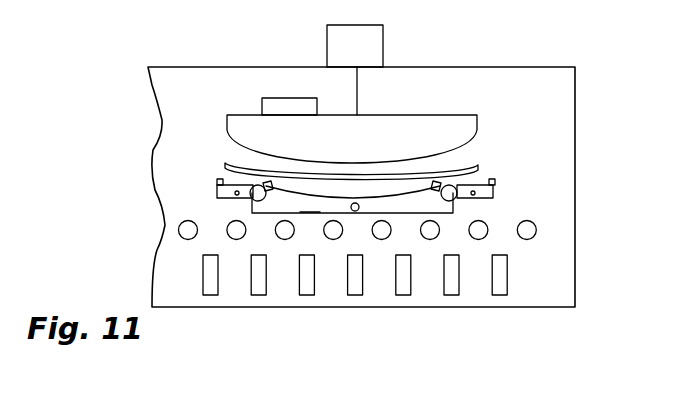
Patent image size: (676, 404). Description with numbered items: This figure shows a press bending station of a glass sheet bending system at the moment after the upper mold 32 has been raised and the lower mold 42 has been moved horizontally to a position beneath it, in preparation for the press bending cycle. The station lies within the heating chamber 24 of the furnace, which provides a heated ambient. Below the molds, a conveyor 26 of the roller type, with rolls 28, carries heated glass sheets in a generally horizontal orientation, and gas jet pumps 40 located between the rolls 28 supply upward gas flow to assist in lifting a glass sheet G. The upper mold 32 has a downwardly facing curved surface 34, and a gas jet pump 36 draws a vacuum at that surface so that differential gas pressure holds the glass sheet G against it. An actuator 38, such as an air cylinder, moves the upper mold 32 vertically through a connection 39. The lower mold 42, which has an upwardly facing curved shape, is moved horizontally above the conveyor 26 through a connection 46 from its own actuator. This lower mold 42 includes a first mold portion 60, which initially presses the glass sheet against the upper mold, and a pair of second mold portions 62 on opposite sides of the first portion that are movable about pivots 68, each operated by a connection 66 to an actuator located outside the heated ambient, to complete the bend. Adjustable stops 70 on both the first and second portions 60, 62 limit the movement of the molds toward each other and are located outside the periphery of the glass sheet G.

The heating chamber 24 is at (488, 90).
The conveyor 26 is at (164, 226).
The rolls 28 is at (228, 237).
The upper mold 32 is at (473, 118).
The curved surface 34 is at (472, 150).
The gas jet pump 36 is at (288, 98).
The actuator 38 is at (383, 43).
The connection 39 is at (357, 87).
The gas jet pumps 40 is at (451, 297).
The lower mold 42 is at (467, 213).
The connection 46 is at (358, 212).
The first mold portion 60 is at (310, 213).
The second mold portions 62 is at (217, 197).
The connection 66 is at (229, 187).
The pivots 68 is at (265, 186).
The adjustable stops 70 is at (217, 181).
The glass sheet G is at (237, 190).